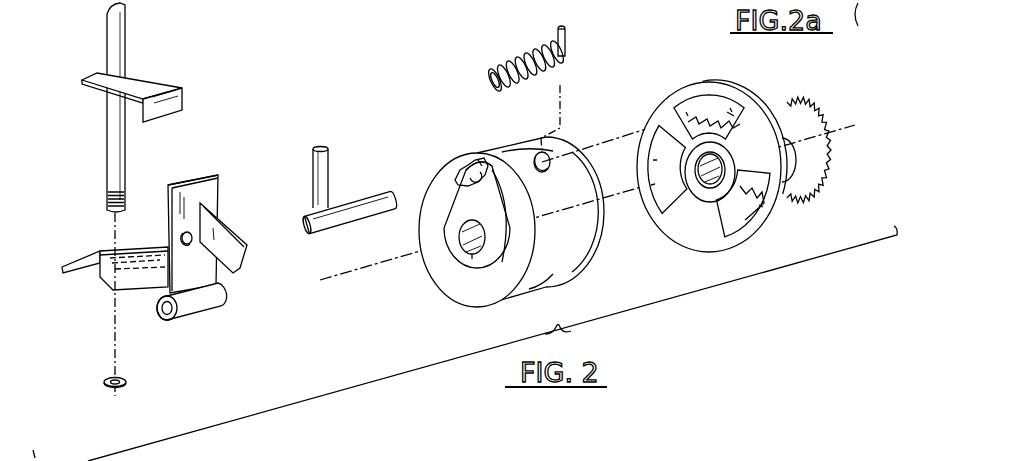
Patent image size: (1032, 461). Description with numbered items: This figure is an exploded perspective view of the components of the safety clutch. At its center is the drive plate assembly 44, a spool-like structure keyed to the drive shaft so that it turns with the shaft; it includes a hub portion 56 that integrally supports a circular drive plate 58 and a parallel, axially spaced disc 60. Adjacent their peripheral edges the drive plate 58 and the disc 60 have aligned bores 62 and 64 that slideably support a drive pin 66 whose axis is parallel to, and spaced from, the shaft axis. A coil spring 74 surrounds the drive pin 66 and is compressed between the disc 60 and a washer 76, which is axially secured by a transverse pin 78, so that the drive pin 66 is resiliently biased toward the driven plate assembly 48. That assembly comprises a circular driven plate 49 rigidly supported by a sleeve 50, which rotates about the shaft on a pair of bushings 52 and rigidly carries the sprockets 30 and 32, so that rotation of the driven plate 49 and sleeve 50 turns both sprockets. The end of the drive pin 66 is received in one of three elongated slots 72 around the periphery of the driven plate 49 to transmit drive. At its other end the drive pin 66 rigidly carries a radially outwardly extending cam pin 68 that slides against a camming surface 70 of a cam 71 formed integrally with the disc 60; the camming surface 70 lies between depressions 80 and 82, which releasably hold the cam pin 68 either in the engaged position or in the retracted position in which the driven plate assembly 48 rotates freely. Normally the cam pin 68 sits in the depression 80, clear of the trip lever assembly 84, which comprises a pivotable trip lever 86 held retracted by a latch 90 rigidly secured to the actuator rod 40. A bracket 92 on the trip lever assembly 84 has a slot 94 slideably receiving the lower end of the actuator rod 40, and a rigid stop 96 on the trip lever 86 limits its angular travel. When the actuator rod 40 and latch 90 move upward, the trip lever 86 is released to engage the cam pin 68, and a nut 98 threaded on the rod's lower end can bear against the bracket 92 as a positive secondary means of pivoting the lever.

In FIG. 2, the sprocket 30 is at (750, 202).
In FIG. 2, the sprocket 32 is at (829, 159).
In FIG. 2, the actuator rod 40 is at (125, 31).
In FIG. 2, the drive plate assembly 44 is at (476, 305).
In FIG. 2, the driven plate assembly 48 is at (703, 254).
In FIG. 2, the driven plate 49 is at (726, 83).
In FIG. 2, the sleeve 50 is at (702, 197).
In FIG. 2, the bushings 52 is at (698, 195).
In FIG. 2, the hub portion 56 is at (560, 208).
In FIG. 2, the drive plate 58 is at (578, 279).
In FIG. 2, the disc 60 is at (537, 288).
In FIG. 2, the bore 62 is at (536, 151).
In FIG. 2, the bore 64 is at (468, 186).
In FIG. 2, the drive pin 66 is at (352, 219).
In FIG. 2, the cam pin 68 is at (327, 165).
In FIG. 2a, the cam pin 68 is at (873, 16).
In FIG. 2, the camming surface 70 is at (470, 160).
In FIG. 2, the cam 71 is at (481, 158).
In FIG. 2, the slots 72 is at (698, 97).
In FIG. 2, the coil spring 74 is at (510, 62).
In FIG. 2, the washer 76 is at (538, 48).
In FIG. 2, the transverse pin 78 is at (567, 29).
In FIG. 2, the depression 80 is at (457, 179).
In FIG. 2, the depression 82 is at (480, 175).
In FIG. 2, the trip lever assembly 84 is at (213, 173).
In FIG. 2, the trip lever 86 is at (183, 180).
In FIG. 2, the latch 90 is at (160, 80).
In FIG. 2, the bracket 92 is at (68, 266).
In FIG. 2, the slot 94 is at (100, 251).
In FIG. 2, the stop 96 is at (228, 270).
In FIG. 2, the nut 98 is at (127, 383).